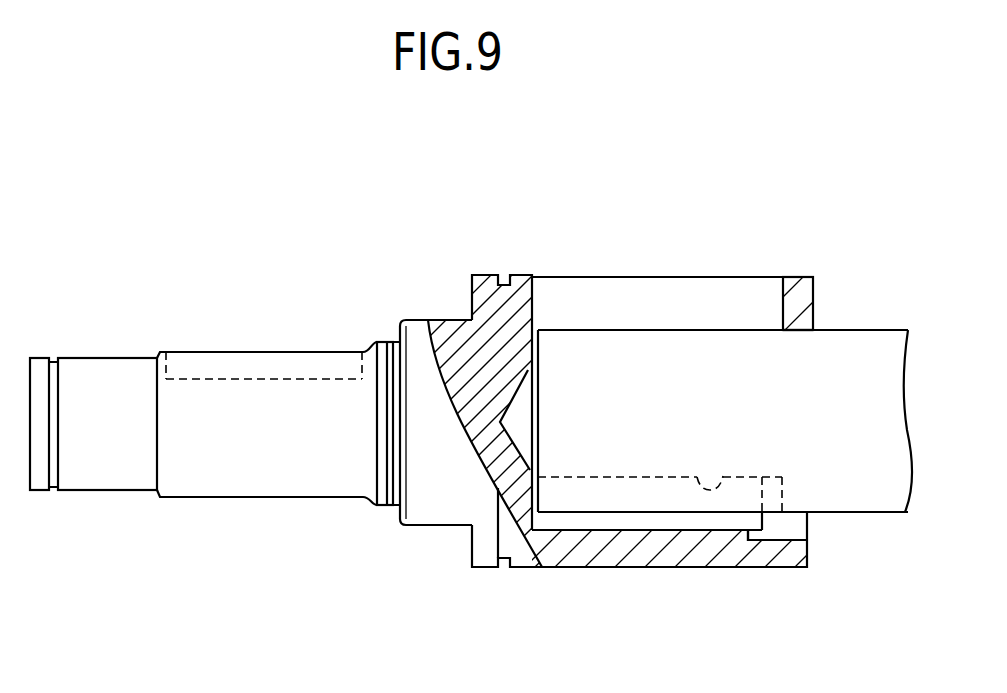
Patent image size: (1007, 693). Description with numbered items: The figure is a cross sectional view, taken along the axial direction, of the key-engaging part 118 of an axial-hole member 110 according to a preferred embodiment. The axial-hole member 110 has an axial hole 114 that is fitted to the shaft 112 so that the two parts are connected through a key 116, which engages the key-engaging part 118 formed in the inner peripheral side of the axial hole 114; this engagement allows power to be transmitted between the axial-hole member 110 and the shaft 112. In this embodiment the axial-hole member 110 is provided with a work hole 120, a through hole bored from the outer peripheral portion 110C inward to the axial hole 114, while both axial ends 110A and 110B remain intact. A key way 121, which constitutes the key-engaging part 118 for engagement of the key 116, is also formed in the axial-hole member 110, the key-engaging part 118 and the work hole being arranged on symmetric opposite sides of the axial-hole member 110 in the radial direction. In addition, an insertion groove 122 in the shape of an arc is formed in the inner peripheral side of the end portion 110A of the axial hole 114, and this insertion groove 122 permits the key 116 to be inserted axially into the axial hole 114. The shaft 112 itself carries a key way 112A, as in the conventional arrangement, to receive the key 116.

The axial-hole member 110 is at (748, 586).
The end portion 110A is at (815, 290).
The end 110B is at (472, 297).
The outer peripheral portion 110C is at (793, 277).
The shaft 112 is at (903, 514).
The key way 112A is at (722, 474).
The axial hole 114 is at (798, 326).
The key 116 is at (628, 526).
The key-engaging part 118 is at (618, 462).
The work hole 120 is at (533, 305).
The key way 121 is at (597, 530).
The insertion groove 122 is at (790, 530).